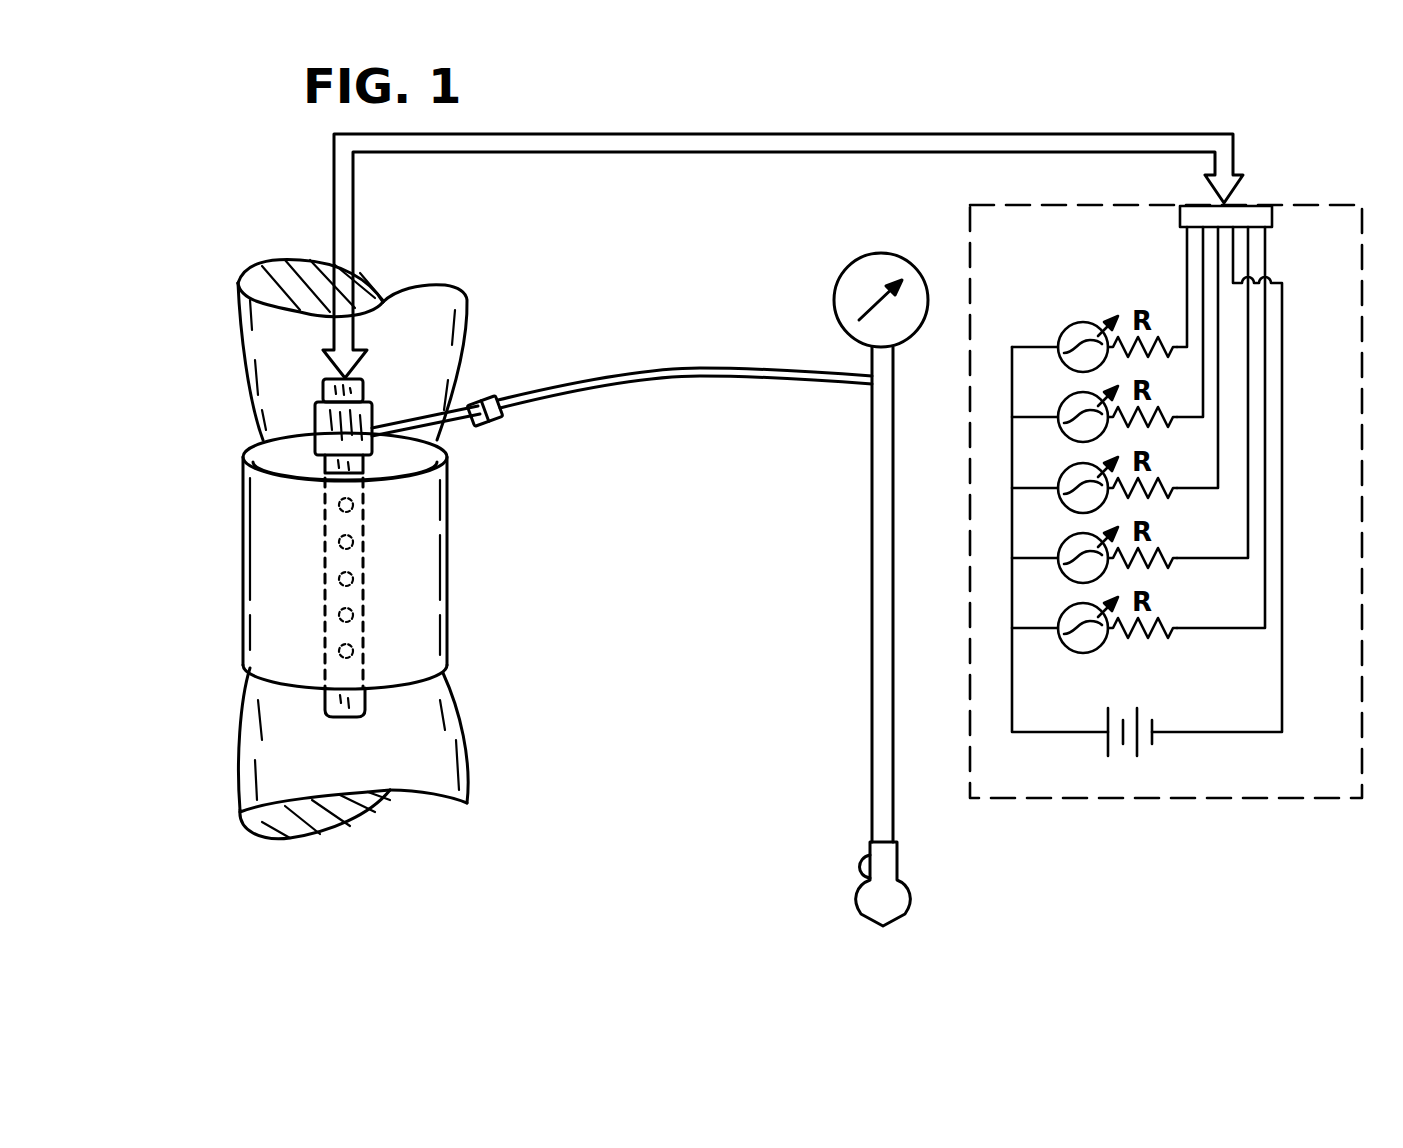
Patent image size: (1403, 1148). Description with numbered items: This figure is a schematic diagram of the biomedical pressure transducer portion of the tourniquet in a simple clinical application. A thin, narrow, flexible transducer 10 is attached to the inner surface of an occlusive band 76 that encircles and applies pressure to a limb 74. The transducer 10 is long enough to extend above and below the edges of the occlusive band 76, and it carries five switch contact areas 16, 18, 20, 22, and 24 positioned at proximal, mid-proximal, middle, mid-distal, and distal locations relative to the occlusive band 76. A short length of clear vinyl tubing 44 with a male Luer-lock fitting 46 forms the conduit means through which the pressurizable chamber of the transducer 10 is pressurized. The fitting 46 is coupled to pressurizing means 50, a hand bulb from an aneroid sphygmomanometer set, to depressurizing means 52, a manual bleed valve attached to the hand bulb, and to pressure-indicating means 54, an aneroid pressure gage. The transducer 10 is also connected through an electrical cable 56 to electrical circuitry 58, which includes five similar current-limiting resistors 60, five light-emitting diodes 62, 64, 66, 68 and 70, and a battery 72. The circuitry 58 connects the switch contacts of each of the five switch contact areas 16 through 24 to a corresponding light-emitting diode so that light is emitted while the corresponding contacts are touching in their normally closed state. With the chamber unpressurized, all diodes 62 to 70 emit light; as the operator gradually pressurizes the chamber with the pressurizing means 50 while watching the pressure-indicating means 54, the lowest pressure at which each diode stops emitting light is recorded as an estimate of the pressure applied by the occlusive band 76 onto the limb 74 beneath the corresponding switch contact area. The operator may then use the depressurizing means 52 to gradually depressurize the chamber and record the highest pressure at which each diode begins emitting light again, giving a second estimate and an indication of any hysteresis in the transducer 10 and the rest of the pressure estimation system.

The transducer 10 is at (318, 420).
The switch contact area 16 is at (365, 510).
The switch contact area 18 is at (365, 547).
The switch contact area 20 is at (365, 584).
The switch contact area 22 is at (365, 620).
The switch contact area 24 is at (365, 656).
The tubing 44 is at (458, 430).
The male Luer-lock fitting 46 is at (462, 400).
The pressurizing means 50 is at (903, 878).
The depressurizing means 52 is at (860, 862).
The pressure-indicating means 54 is at (835, 303).
The electrical cable 56 is at (334, 205).
The electrical circuitry 58 is at (1298, 202).
The current-limiting resistor 60 is at (1165, 640).
The light-emitting diode 62 is at (1070, 368).
The light-emitting diode 64 is at (1070, 438).
The light-emitting diode 66 is at (1070, 509).
The light-emitting diode 68 is at (1070, 579).
The light-emitting diode 70 is at (1070, 649).
The battery 72 is at (1104, 745).
The limb 74 is at (238, 712).
The occlusive band 76 is at (243, 515).